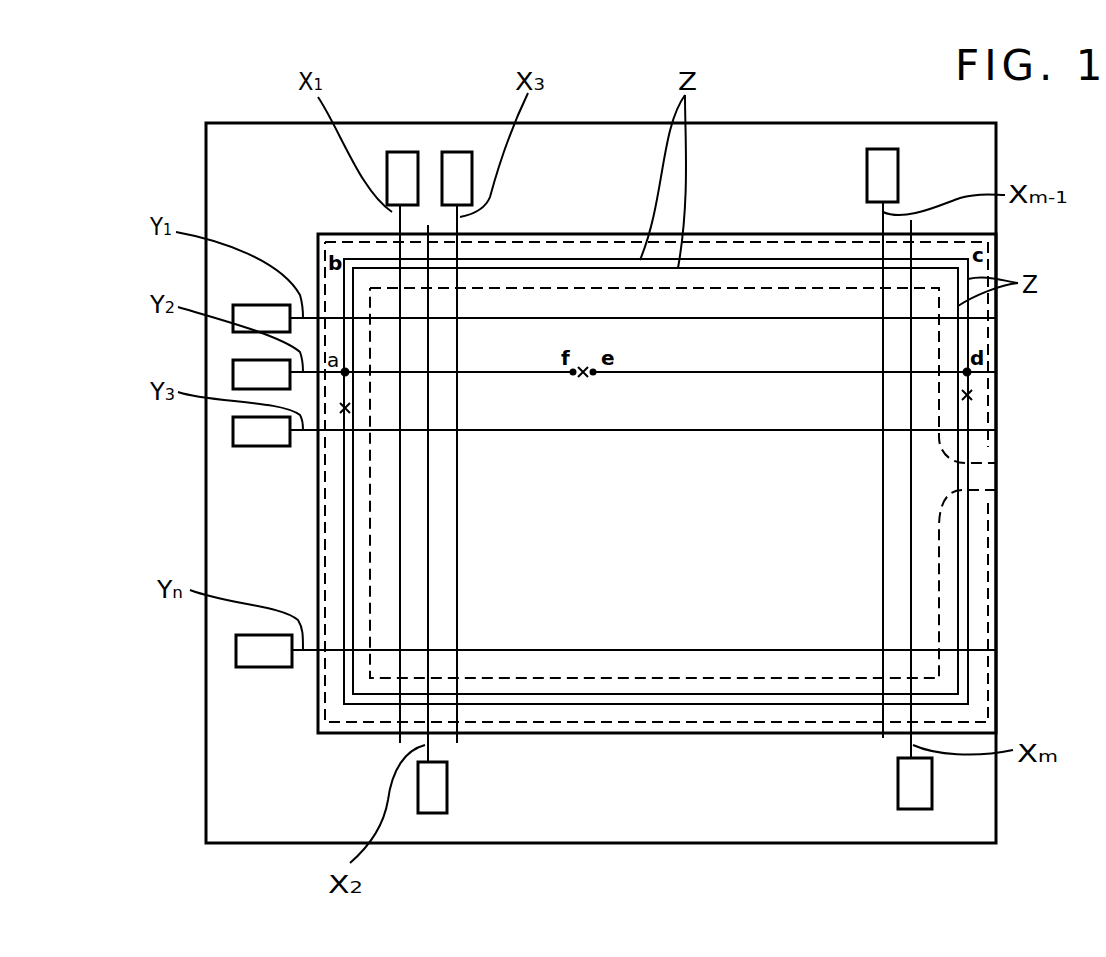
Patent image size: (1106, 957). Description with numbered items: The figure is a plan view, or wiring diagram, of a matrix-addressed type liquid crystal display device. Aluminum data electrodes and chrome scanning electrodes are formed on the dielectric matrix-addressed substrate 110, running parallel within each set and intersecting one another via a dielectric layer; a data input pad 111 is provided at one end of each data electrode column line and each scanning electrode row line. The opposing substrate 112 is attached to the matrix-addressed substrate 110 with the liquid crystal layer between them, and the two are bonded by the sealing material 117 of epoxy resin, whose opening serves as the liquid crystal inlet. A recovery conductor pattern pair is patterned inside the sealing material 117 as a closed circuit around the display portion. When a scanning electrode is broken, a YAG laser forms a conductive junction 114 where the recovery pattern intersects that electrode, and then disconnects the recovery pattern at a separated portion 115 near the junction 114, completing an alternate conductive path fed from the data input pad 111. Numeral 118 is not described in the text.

The matrix-addressed substrate 110 is at (648, 845).
The data input pad 111 is at (454, 153).
The opposing substrate 112 is at (732, 733).
The conductive junction 114 is at (345, 372).
The separated portion 115 is at (345, 408).
The sealing material 117 is at (560, 713).
The bypass lead portion 118 is at (987, 478).